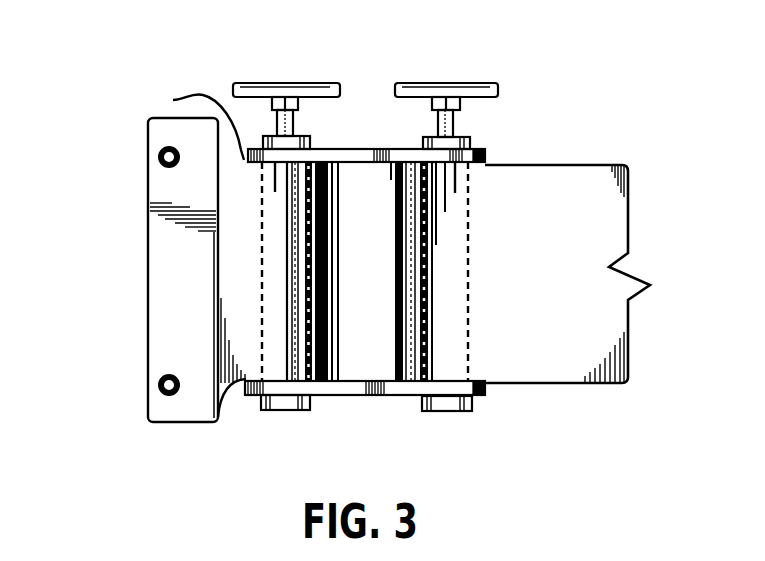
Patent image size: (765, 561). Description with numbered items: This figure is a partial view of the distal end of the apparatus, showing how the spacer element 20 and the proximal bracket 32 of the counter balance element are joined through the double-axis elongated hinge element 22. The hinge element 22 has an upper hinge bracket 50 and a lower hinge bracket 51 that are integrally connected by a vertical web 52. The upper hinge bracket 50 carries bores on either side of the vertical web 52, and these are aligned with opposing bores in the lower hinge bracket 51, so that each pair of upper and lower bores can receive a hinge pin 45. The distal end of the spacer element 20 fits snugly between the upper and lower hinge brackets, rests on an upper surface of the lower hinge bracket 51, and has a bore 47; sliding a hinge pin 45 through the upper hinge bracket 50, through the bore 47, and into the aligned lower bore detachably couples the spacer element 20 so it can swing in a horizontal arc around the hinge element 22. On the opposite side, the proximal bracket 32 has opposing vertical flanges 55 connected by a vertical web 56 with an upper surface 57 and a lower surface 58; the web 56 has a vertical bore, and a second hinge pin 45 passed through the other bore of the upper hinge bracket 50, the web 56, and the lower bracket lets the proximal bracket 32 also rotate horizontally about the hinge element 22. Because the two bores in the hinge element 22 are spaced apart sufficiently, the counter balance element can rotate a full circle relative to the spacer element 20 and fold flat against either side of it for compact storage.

The spacer element 20 is at (570, 190).
The double-axis elongated hinge element 22 is at (358, 122).
The proximal bracket 32 is at (148, 188).
The hinge pin 45 is at (270, 277).
The bore 47 is at (457, 322).
The upper hinge bracket 50 is at (380, 145).
The lower hinge bracket 51 is at (417, 399).
The vertical web 52 is at (378, 348).
The vertical flanges 55 is at (172, 338).
The vertical web 56 is at (325, 307).
The upper surface 57 is at (173, 100).
The lower surface 58 is at (231, 388).